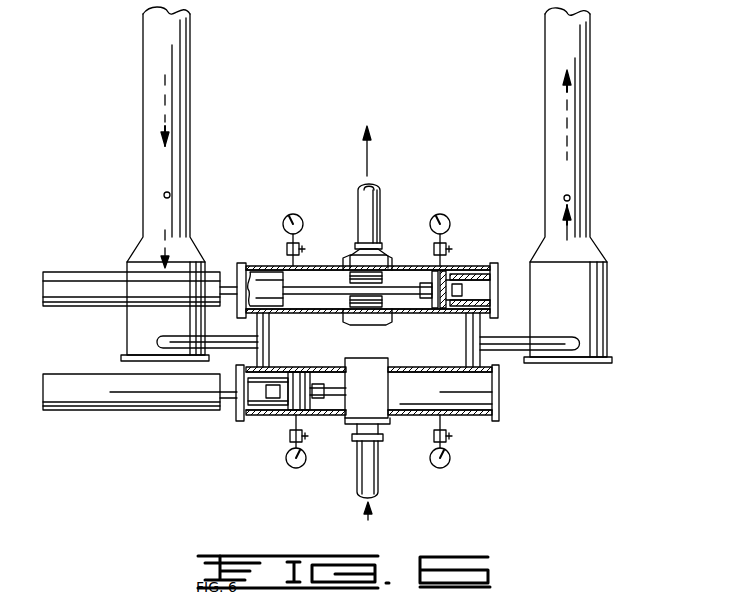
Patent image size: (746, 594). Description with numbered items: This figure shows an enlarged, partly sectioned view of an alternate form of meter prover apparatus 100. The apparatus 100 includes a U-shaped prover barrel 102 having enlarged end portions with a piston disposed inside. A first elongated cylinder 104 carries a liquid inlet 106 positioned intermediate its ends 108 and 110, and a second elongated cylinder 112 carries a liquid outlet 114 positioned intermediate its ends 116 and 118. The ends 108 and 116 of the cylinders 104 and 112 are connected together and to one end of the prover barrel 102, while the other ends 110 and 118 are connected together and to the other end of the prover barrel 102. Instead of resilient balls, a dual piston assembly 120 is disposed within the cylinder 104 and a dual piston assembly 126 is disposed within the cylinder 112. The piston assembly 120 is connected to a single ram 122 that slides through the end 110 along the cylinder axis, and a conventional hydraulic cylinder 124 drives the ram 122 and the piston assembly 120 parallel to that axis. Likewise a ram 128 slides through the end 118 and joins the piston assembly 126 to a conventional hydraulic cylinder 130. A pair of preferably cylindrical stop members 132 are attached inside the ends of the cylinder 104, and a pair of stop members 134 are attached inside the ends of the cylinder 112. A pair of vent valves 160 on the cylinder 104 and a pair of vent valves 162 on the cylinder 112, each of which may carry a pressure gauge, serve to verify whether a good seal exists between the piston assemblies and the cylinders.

The meter prover apparatus 100 is at (612, 148).
The prover barrel 102 is at (190, 118).
The first elongated cylinder 104 is at (487, 418).
The liquid inlet 106 is at (382, 428).
The end of first cylinder 108 is at (500, 410).
The end of first cylinder 110 is at (236, 424).
The second elongated cylinder 112 is at (458, 252).
The liquid outlet 114 is at (378, 256).
The end of second cylinder 116 is at (510, 250).
The end of second cylinder 118 is at (246, 262).
The dual piston assembly 120 is at (302, 374).
The ram 122 is at (230, 406).
The hydraulic cylinder 124 is at (90, 398).
The dual piston assembly 126 is at (448, 300).
The ram 128 is at (337, 298).
The hydraulic cylinder 130 is at (92, 306).
The stop members 132 is at (268, 416).
The stop members 134 is at (263, 276).
The vent valves 160 is at (306, 445).
The vent valves 162 is at (300, 236).